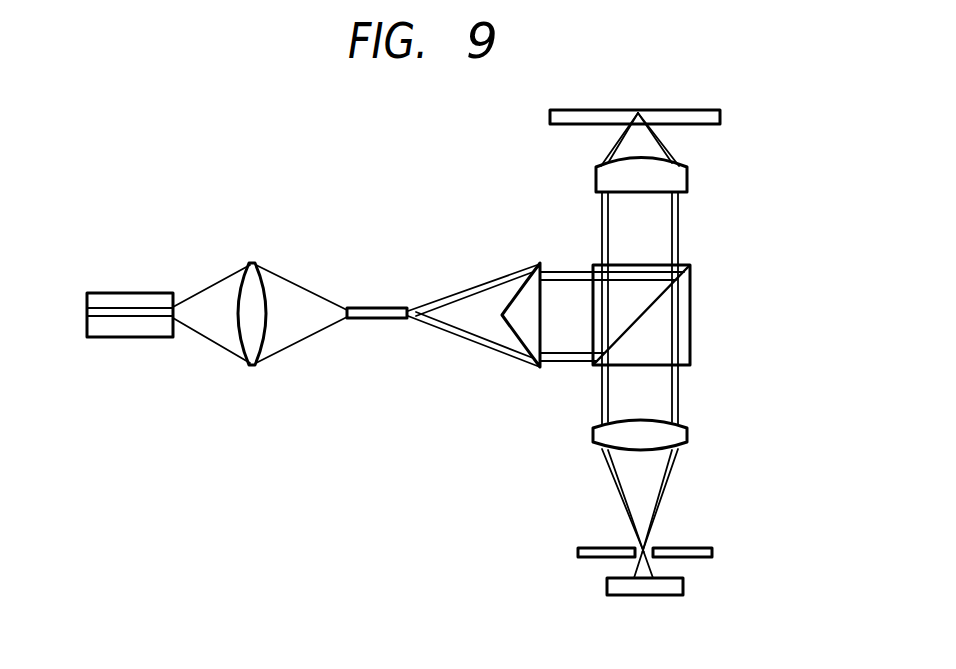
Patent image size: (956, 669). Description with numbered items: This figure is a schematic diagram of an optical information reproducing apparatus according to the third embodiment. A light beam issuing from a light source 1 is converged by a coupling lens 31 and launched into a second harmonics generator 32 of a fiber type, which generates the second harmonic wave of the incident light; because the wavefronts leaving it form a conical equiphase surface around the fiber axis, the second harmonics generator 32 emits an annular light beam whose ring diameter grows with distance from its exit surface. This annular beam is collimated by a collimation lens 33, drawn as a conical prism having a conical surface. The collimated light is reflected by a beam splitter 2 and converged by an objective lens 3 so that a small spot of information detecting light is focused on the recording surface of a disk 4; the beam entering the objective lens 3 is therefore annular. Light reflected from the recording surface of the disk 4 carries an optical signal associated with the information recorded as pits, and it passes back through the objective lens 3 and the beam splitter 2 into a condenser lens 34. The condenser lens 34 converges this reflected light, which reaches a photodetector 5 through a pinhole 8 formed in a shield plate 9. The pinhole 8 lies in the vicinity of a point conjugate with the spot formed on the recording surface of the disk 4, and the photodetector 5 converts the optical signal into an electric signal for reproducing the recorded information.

The light source 1 is at (157, 292).
The coupling lens 31 is at (252, 262).
The second harmonics generator (SHG) of a fiber type 32 is at (366, 307).
The collimation lens 33 is at (538, 262).
The beam splitter 2 is at (692, 286).
The objective lens 3 is at (688, 177).
The disk 4 is at (693, 110).
The condenser lens 34 is at (688, 430).
The pinhole 8 is at (648, 547).
The shield plate 9 is at (710, 557).
The photodetector 5 is at (685, 588).